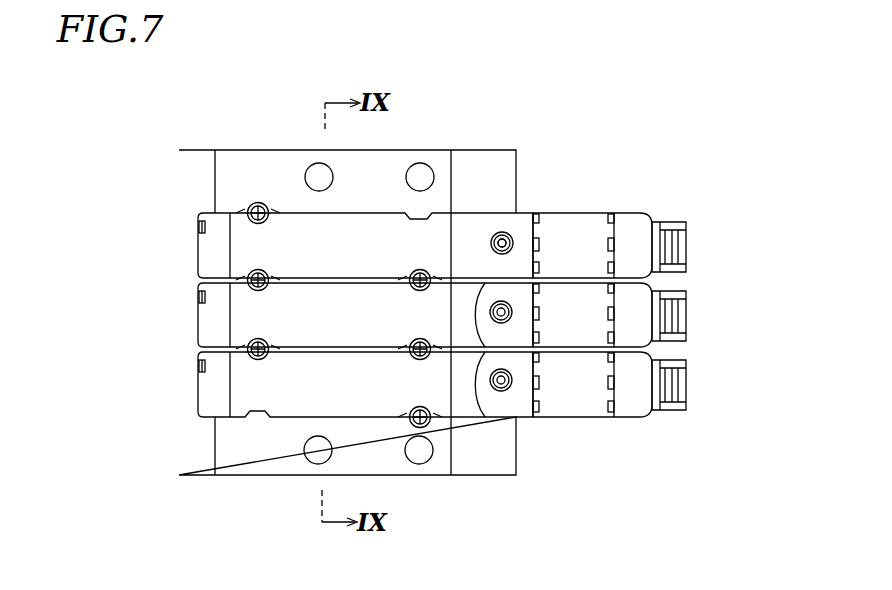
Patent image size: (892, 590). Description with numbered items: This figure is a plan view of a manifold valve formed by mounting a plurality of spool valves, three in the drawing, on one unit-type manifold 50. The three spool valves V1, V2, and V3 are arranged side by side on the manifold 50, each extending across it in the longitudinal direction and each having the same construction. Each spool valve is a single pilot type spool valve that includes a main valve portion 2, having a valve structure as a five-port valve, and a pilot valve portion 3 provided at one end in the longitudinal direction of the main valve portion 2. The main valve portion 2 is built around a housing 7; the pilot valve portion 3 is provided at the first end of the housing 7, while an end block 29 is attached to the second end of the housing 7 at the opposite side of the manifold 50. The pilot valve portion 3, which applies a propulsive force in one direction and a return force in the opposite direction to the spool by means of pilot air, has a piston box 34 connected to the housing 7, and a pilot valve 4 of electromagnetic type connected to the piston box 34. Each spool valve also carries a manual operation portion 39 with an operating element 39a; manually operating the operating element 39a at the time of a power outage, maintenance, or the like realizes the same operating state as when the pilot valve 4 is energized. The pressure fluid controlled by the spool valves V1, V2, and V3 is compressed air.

The main valve portion 2 is at (253, 186).
The pilot valve portion 3 is at (597, 194).
The pilot valve 4 is at (587, 248).
The housing 7 is at (302, 233).
The end block 29 is at (218, 230).
The piston box 34 is at (478, 233).
The manual operation portion 39 is at (504, 210).
The operating element 39a is at (511, 240).
The unit-type manifold 50 is at (233, 452).
The spool valve V1 is at (128, 375).
The spool valve V2 is at (128, 299).
The spool valve V3 is at (128, 218).